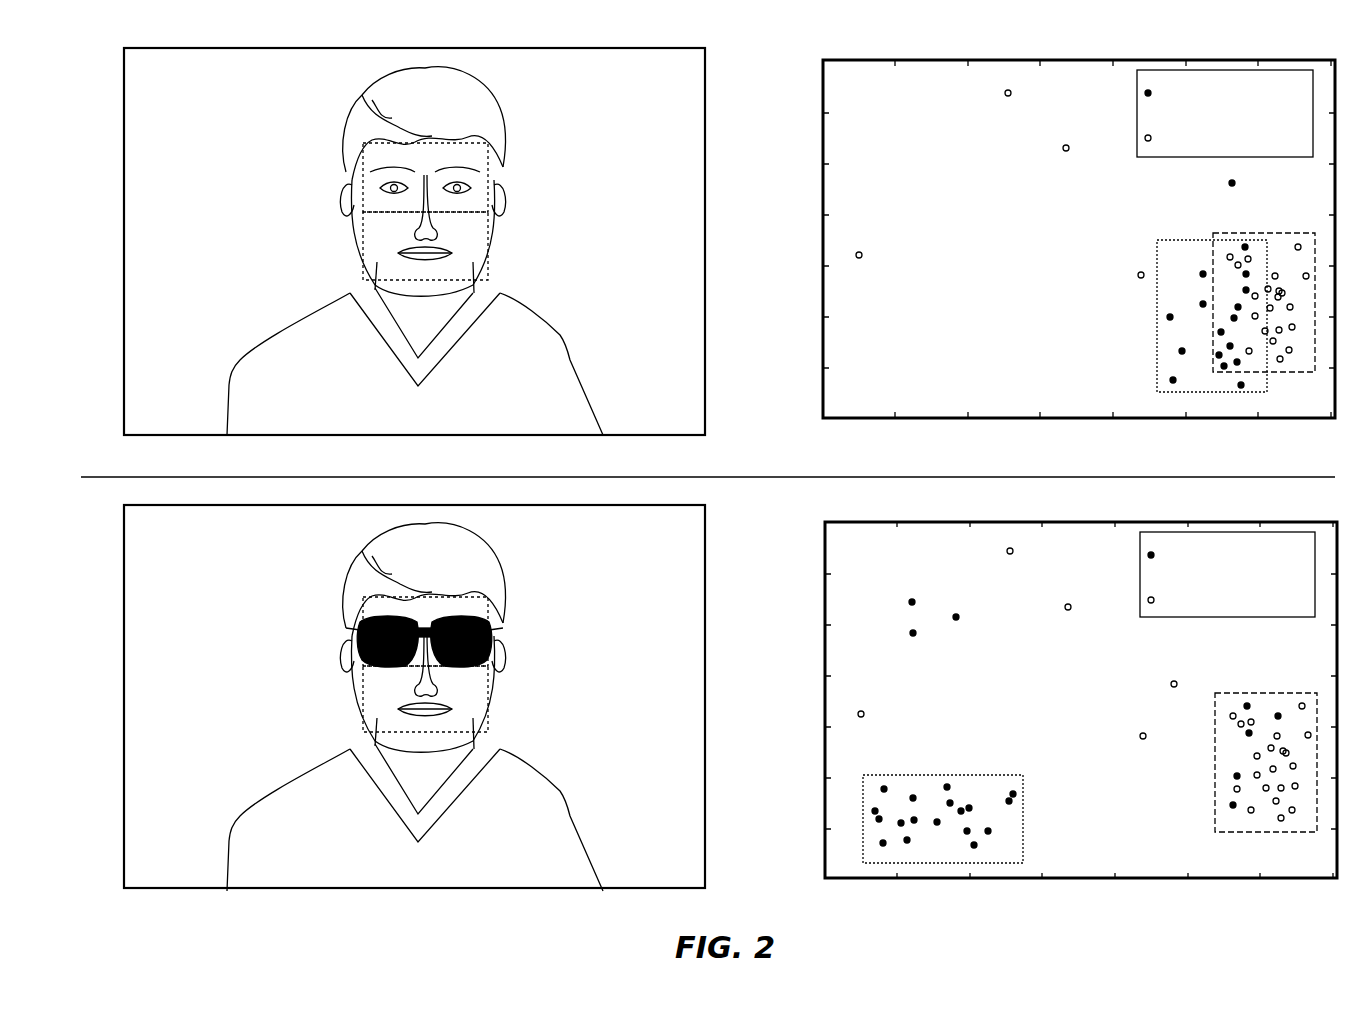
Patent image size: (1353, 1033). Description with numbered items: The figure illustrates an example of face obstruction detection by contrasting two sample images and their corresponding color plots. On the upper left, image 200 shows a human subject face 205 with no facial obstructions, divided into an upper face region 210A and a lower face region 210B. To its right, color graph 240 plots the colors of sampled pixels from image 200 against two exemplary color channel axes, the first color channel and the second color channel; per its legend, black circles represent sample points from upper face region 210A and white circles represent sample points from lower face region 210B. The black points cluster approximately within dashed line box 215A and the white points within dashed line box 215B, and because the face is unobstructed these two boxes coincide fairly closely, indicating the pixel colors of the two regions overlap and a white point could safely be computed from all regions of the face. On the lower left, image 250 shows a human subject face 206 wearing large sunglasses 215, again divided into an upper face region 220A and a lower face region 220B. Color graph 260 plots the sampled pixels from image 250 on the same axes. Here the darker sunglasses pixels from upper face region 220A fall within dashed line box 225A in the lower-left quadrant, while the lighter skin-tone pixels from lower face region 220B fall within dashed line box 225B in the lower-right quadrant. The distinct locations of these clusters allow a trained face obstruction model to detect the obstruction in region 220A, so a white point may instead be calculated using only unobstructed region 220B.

The image 200 is at (100, 112).
The human subject face 205 is at (343, 146).
The upper face region 210A is at (492, 165).
The lower face region 210B is at (492, 262).
The color graph 240 is at (798, 112).
The dashed line box 215A is at (1165, 237).
The dashed line box 215B is at (1247, 233).
The image 250 is at (100, 569).
The human subject face 206 is at (343, 627).
The sunglasses 215 is at (362, 660).
The upper face region 220A is at (492, 622).
The lower face region 220B is at (492, 714).
The color graph 260 is at (798, 572).
The dashed line box 225A is at (1008, 768).
The dashed line box 225B is at (1252, 690).